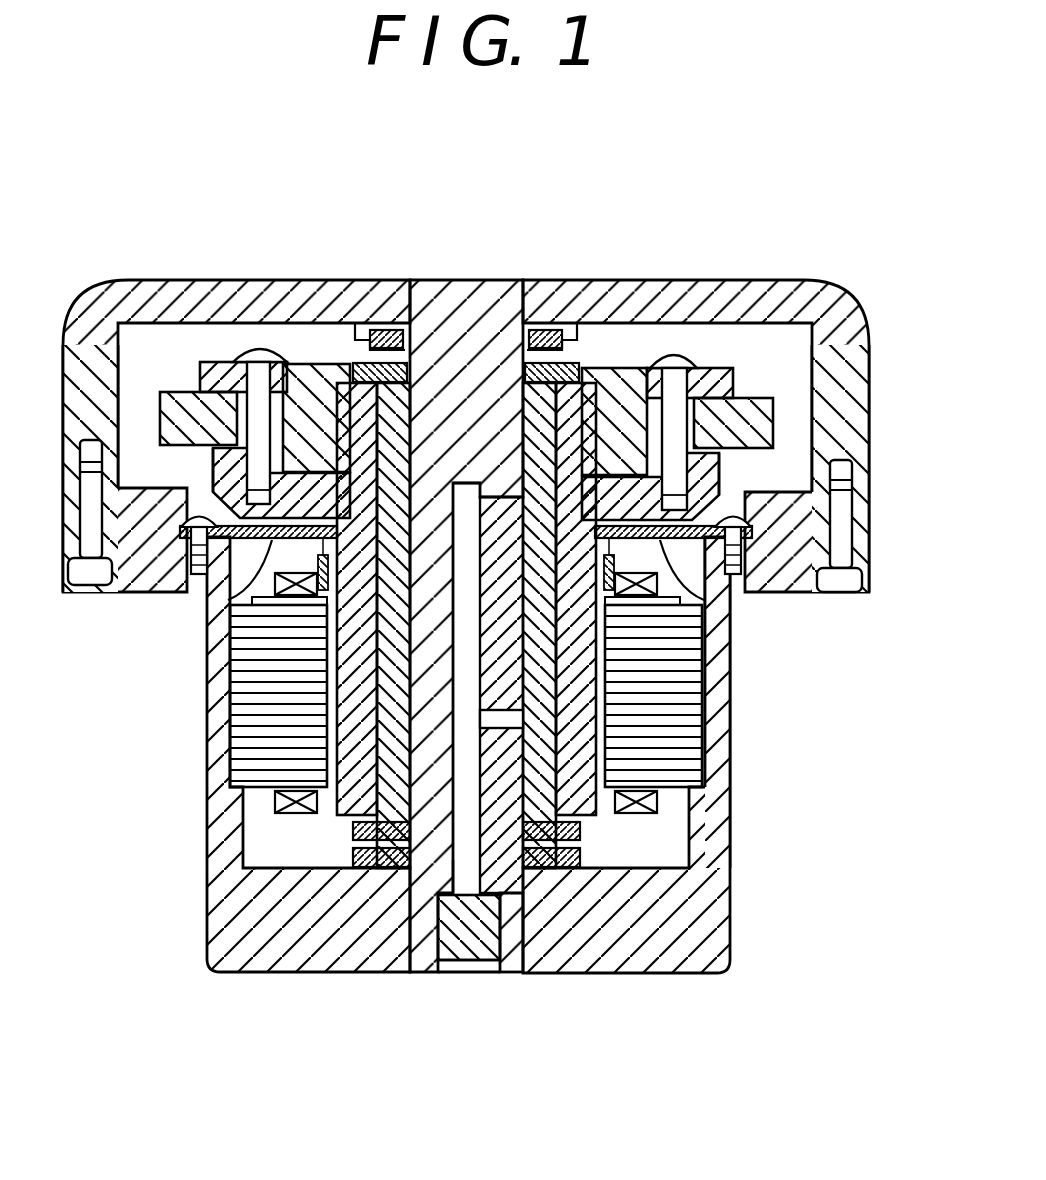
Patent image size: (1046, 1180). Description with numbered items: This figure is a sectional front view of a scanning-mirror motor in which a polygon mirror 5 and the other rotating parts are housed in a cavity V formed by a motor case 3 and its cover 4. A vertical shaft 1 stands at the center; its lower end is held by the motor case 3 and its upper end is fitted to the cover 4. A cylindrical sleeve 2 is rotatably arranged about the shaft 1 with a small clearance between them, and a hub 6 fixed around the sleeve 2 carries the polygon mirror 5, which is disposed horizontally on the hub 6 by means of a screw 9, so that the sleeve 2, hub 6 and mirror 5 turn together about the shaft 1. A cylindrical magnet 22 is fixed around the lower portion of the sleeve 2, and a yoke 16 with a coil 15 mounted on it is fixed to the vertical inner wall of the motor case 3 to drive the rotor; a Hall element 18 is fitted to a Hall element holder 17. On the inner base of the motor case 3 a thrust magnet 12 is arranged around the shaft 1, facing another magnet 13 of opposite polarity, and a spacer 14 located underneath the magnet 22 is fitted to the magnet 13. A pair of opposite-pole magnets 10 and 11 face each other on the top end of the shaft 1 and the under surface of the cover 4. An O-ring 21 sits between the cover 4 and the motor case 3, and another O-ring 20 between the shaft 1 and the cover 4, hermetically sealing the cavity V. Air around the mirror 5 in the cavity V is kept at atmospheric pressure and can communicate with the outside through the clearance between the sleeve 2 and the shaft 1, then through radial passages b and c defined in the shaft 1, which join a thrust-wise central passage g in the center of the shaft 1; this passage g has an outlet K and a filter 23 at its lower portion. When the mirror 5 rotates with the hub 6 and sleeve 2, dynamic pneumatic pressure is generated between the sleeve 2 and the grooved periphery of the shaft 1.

The shaft 1 is at (480, 300).
The cylindrical sleeve 2 is at (550, 665).
The motor case 3 is at (680, 980).
The cover 4 is at (626, 282).
The polygon mirror 5 is at (747, 400).
The hub 6 is at (720, 477).
The screw 9 is at (677, 353).
The magnet 10 is at (545, 328).
The magnet 11 is at (368, 326).
The thrust magnet 12 is at (565, 868).
The magnet 13 is at (377, 812).
The spacer 14 is at (333, 817).
The coil 15 is at (293, 812).
The yoke 16 is at (245, 712).
The Hall element holder 17 is at (200, 590).
The Hall element 18 is at (733, 590).
The O-ring 20 is at (398, 328).
The O-ring 21 is at (823, 525).
The cylindrical magnet 22 is at (583, 773).
The filter 23 is at (453, 957).
The cavity V is at (745, 350).
The radial passage b is at (496, 471).
The radial passage c is at (506, 742).
The central passage g is at (462, 850).
The outlet K is at (483, 975).